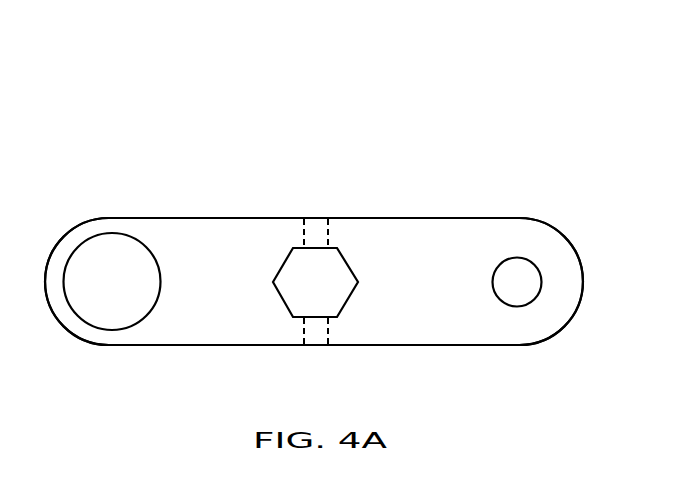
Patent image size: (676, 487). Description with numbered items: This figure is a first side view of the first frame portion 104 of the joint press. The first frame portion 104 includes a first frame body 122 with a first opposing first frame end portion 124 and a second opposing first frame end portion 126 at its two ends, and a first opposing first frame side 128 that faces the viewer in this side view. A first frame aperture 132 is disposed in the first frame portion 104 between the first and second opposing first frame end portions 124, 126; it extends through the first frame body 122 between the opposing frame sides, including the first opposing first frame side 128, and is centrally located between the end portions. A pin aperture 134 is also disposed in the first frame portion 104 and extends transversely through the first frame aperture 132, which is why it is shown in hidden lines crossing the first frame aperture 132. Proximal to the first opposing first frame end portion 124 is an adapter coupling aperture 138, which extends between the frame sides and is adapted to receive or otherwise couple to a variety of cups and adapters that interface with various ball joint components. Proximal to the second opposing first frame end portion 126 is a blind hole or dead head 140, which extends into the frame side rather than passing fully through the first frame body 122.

The first frame portion 104 is at (255, 121).
The first frame body 122 is at (403, 217).
The first opposing first frame end portion 124 is at (100, 217).
The second opposing first frame end portion 126 is at (533, 217).
The first opposing first frame side 128 is at (433, 322).
The first frame aperture 132 is at (288, 303).
The pin aperture 134 is at (314, 212).
The adapter coupling aperture 138 is at (112, 329).
The blind hole or dead head 140 is at (525, 307).